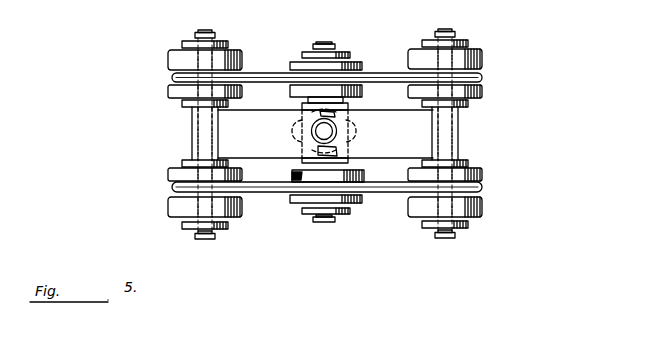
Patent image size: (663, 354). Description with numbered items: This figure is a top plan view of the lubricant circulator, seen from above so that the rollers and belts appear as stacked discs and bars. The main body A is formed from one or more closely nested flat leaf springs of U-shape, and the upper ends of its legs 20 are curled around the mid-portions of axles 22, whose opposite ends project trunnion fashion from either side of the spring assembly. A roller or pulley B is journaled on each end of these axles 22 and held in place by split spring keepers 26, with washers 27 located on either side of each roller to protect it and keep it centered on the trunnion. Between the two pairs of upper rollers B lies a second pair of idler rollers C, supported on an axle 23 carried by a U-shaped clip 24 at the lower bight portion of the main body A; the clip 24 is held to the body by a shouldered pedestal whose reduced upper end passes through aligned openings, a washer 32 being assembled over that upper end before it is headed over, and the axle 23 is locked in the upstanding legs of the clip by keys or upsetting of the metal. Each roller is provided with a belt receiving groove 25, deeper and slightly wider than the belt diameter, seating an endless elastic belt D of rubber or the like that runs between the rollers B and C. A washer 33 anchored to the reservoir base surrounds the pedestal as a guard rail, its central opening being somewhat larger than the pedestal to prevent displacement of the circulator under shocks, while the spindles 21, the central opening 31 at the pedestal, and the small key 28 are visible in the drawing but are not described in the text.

The legs 20 is at (272, 129).
The spindle 21 is at (192, 121).
The axles 22 is at (203, 31).
The axle 23 is at (322, 42).
The U-shaped clip 24 is at (348, 162).
The belt receiving groove 25 is at (172, 78).
The split spring keepers 26 is at (333, 50).
The washers 27 is at (182, 43).
The key 28 is at (291, 173).
The bore 31 is at (337, 134).
The washer 32 is at (310, 135).
The washer 33 is at (350, 119).
The main body A is at (235, 133).
The roller B is at (484, 60).
The idler rollers C is at (357, 205).
The endless elastic belt D is at (261, 72).